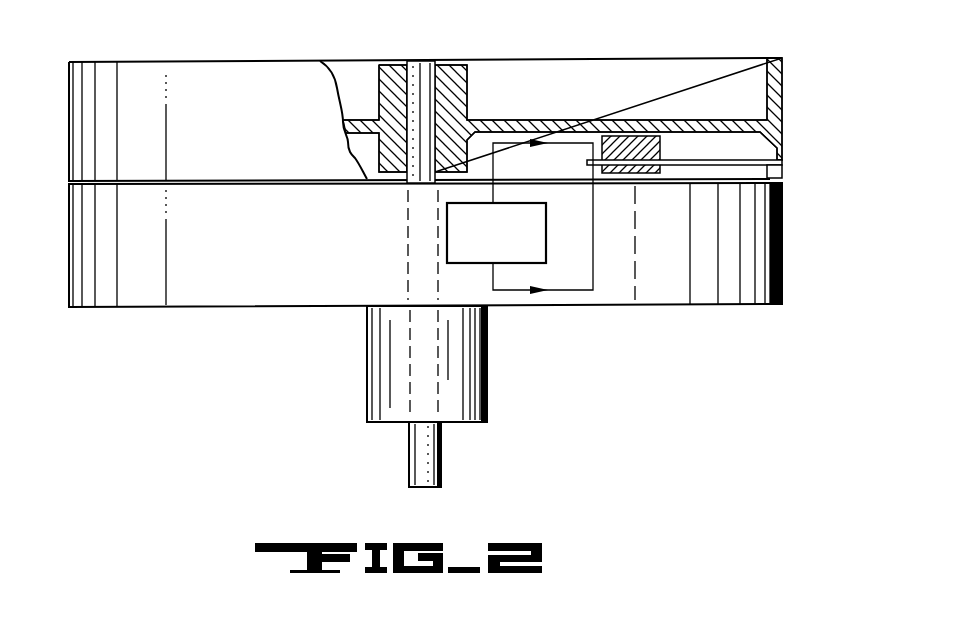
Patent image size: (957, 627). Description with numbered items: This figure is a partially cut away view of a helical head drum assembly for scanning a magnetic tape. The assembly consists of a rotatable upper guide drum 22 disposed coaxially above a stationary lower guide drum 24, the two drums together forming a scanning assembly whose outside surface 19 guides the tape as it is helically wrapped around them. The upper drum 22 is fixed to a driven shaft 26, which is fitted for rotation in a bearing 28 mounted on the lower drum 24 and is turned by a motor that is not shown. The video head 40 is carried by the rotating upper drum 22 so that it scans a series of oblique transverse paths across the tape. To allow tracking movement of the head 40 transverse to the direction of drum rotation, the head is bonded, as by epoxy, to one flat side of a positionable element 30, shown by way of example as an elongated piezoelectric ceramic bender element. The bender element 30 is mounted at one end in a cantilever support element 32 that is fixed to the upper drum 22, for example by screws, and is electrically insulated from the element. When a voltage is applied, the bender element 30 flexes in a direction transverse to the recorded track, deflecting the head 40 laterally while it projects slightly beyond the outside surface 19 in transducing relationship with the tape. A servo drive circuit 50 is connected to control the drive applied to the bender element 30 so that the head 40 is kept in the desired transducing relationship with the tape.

The surface 19 is at (264, 133).
The upper guide drum 22 is at (782, 73).
The lower guide drum 24 is at (712, 304).
The driven shaft 26 is at (441, 457).
The bearing 28 is at (487, 391).
The positionable element 30 is at (725, 160).
The cantilever support element 32 is at (660, 147).
The video head 40 is at (786, 172).
The servo drive circuit 50 is at (546, 222).